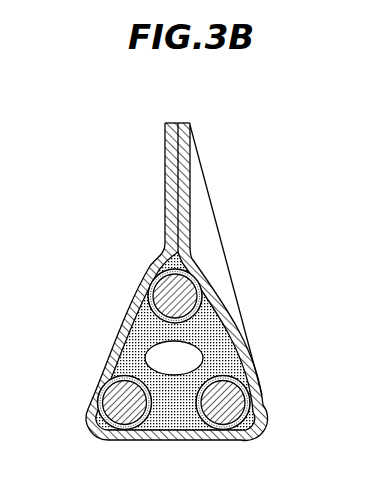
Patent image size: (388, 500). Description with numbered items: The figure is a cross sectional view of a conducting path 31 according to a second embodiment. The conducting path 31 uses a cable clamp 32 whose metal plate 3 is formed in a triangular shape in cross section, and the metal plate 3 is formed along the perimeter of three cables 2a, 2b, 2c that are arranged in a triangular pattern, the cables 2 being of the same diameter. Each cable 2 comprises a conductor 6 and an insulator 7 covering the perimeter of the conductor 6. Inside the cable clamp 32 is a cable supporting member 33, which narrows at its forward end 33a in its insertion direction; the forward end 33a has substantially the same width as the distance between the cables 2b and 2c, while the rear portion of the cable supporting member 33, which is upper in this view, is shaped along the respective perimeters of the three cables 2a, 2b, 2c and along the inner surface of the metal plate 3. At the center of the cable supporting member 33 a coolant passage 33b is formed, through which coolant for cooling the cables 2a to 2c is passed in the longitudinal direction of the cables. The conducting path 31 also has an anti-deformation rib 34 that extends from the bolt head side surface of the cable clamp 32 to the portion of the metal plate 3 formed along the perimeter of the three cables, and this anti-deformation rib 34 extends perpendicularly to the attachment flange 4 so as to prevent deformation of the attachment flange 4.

The conducting path 31 is at (67, 99).
The cable clamp 32 is at (184, 123).
The cable supporting member 33 is at (232, 362).
The forward end 33a is at (171, 442).
The coolant passage 33b is at (112, 352).
The anti-deformation rib 34 is at (217, 256).
The cable 2 is at (150, 270).
The cable 2a is at (138, 295).
The cable 2b is at (122, 441).
The cable 2c is at (223, 442).
The metal plate 3 is at (228, 300).
The attachment flange 4 is at (166, 168).
The conductor 6 is at (97, 395).
The insulator 7 is at (93, 416).